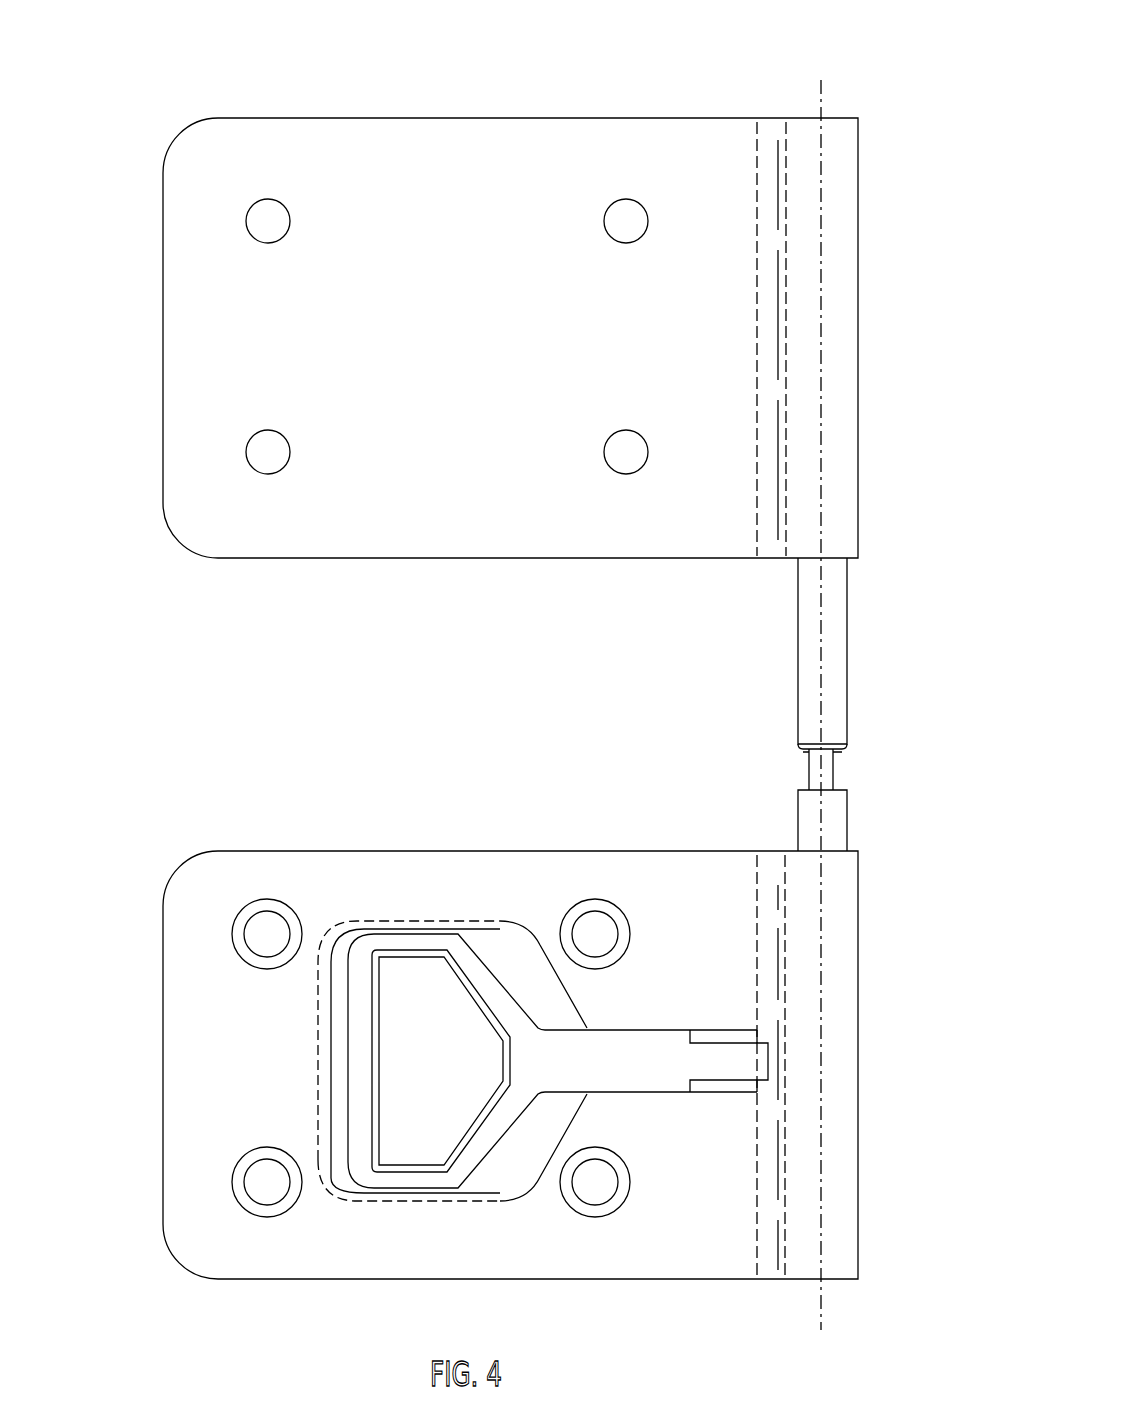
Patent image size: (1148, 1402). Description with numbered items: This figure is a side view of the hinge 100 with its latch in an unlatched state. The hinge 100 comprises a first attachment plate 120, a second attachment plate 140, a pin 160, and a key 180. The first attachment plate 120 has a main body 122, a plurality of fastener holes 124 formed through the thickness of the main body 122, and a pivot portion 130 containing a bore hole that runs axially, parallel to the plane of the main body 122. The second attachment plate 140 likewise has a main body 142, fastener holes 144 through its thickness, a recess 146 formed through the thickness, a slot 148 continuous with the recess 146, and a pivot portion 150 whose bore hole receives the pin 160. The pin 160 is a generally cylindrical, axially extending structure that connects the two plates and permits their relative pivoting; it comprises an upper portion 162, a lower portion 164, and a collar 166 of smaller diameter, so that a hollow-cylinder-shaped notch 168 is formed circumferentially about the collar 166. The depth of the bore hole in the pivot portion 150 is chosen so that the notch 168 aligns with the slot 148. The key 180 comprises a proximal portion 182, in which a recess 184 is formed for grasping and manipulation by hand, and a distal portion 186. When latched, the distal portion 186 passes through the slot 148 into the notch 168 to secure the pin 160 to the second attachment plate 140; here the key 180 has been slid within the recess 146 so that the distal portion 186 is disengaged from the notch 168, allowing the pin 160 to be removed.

The hinge 100 is at (681, 70).
The first attachment plate 120 is at (136, 349).
The main body 122 is at (475, 338).
The fastener holes 124 is at (636, 220).
The pivot portion 130 is at (833, 212).
The second attachment plate 140 is at (144, 1088).
The main body 142 is at (264, 1068).
The fastener holes 144 is at (272, 930).
The recess 146 is at (522, 958).
The slot 148 is at (749, 1092).
The pivot portion 150 is at (835, 1020).
The pin 160 is at (866, 694).
The upper portion 162 is at (808, 674).
The lower portion 164 is at (838, 815).
The collar 166 is at (833, 770).
The notch 168 is at (796, 768).
The key 180 is at (522, 1152).
The proximal portion 182 is at (390, 1183).
The recess 184 is at (483, 1113).
The distal portion 186 is at (727, 1063).